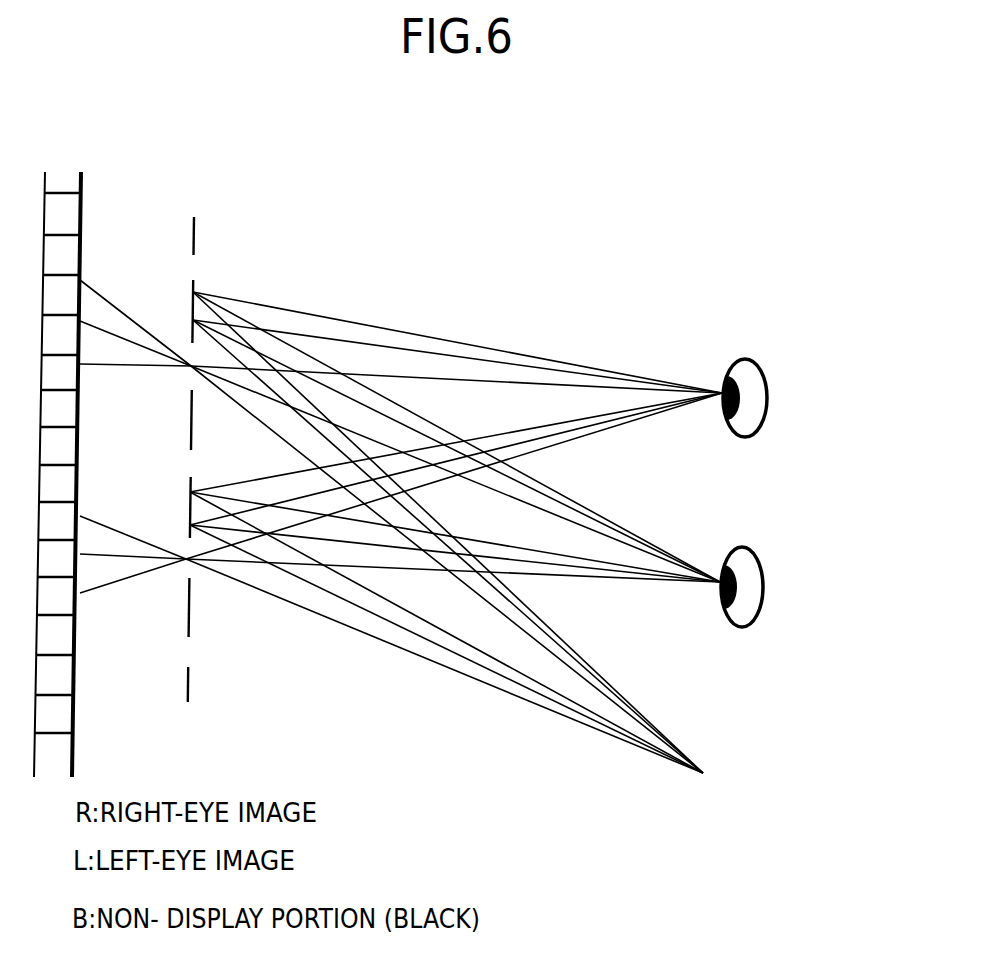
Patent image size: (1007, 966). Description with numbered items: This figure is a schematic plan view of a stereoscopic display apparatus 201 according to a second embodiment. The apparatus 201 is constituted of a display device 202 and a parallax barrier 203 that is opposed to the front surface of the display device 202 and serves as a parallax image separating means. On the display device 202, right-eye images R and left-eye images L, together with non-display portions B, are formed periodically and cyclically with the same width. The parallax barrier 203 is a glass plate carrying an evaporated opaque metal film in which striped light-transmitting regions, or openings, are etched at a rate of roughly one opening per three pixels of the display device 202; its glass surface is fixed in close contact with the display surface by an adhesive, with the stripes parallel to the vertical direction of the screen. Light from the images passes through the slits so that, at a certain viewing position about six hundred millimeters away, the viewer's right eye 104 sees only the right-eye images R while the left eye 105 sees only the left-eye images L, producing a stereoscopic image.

The stereoscopic display apparatus 201 is at (213, 204).
The display device 202 is at (112, 160).
The parallax barrier 203 is at (194, 239).
The right eye 104 is at (746, 358).
The left eye 105 is at (740, 547).